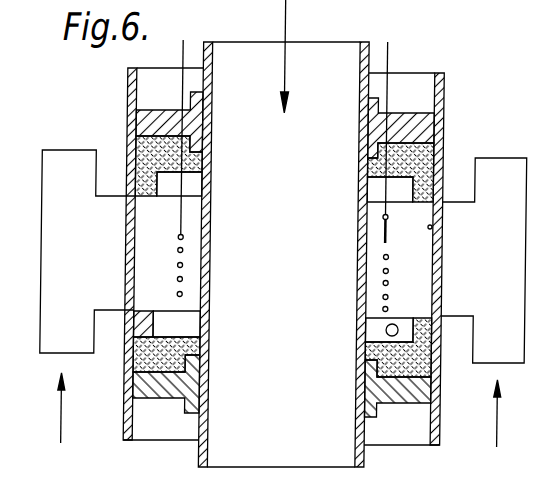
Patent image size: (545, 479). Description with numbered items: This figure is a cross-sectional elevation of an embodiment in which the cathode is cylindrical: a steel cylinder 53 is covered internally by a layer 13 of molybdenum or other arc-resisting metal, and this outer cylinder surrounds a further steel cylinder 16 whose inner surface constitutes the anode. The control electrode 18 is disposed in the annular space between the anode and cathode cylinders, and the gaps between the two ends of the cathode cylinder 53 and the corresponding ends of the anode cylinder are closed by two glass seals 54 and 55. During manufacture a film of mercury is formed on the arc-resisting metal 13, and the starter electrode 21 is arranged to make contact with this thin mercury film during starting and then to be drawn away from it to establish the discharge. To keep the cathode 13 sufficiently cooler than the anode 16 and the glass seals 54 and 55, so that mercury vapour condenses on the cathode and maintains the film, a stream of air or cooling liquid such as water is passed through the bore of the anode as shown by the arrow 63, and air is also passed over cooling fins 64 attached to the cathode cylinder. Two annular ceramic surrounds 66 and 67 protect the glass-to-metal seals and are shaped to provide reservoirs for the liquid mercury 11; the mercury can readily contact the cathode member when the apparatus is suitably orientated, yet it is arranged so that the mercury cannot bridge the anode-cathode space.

The liquid mercury 11 is at (396, 322).
The layer of molybdenum or other arc-resisting metal 13 is at (441, 228).
The steel cylinder 16 is at (364, 460).
The control electrode 18 is at (177, 251).
The starter electrode 21 is at (385, 231).
The steel cylinder 53 is at (441, 118).
The glass seal 54 is at (406, 122).
The glass seal 55 is at (408, 398).
The arrow 63 is at (283, 20).
The cooling fins 64 is at (61, 160).
The annular ceramic surround 66 is at (419, 157).
The annular ceramic surround 67 is at (424, 369).